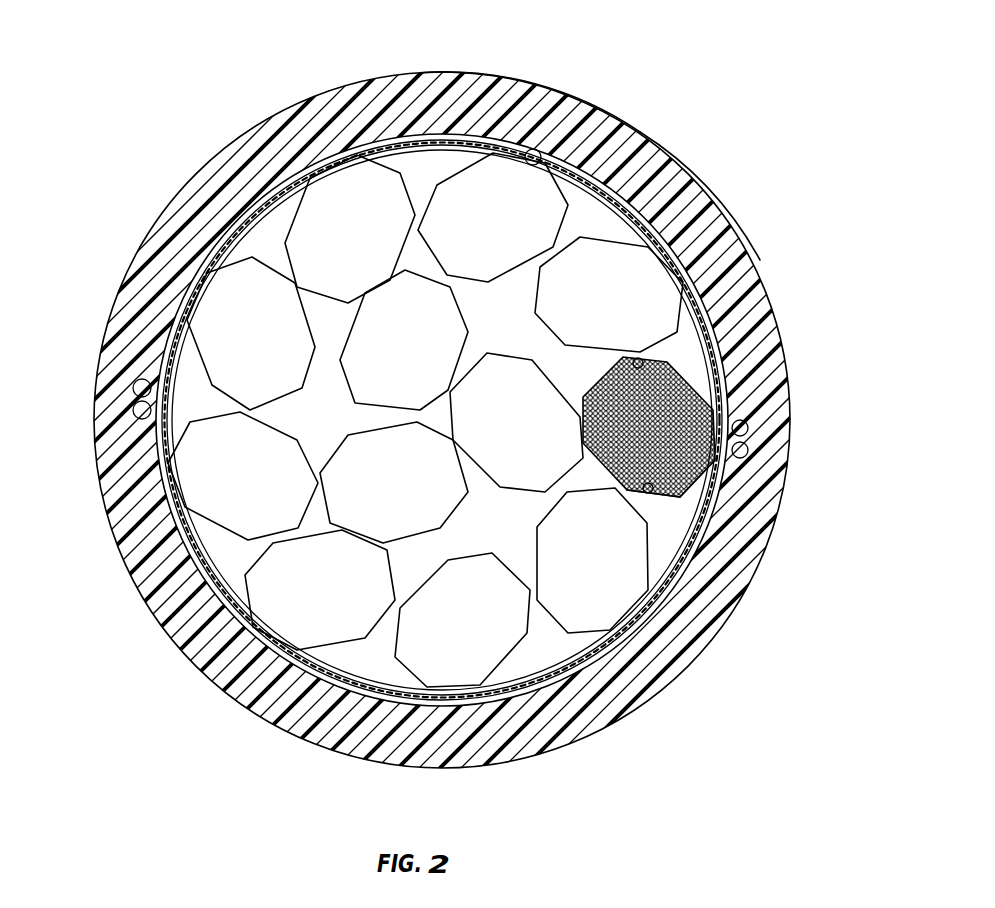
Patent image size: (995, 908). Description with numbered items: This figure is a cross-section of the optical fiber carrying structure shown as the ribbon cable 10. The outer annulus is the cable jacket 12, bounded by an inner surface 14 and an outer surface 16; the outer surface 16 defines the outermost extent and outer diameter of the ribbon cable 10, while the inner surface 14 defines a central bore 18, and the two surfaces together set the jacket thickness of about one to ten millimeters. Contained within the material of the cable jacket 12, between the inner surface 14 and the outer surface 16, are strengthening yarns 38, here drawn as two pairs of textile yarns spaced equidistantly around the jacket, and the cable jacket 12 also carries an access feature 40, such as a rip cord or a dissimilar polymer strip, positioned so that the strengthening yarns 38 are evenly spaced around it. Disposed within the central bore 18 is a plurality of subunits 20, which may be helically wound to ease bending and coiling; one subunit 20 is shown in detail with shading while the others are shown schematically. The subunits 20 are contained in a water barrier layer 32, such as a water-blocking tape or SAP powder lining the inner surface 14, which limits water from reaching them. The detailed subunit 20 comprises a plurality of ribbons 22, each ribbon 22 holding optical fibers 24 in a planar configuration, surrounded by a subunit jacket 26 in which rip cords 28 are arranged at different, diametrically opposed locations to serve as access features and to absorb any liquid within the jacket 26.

The ribbon cable 10 is at (205, 82).
The cable jacket 12 is at (435, 78).
The inner surface 14 is at (510, 147).
The outer surface 16 is at (528, 83).
The central bore 18 is at (707, 198).
The subunit 20 is at (687, 345).
The ribbon 22 is at (710, 479).
The optical fiber 24 is at (703, 402).
The jacket 26 is at (651, 493).
The rip cord 28 is at (642, 359).
The water barrier layer 32 is at (632, 228).
The strengthening yarn 38 is at (134, 389).
The access feature 40 is at (210, 252).